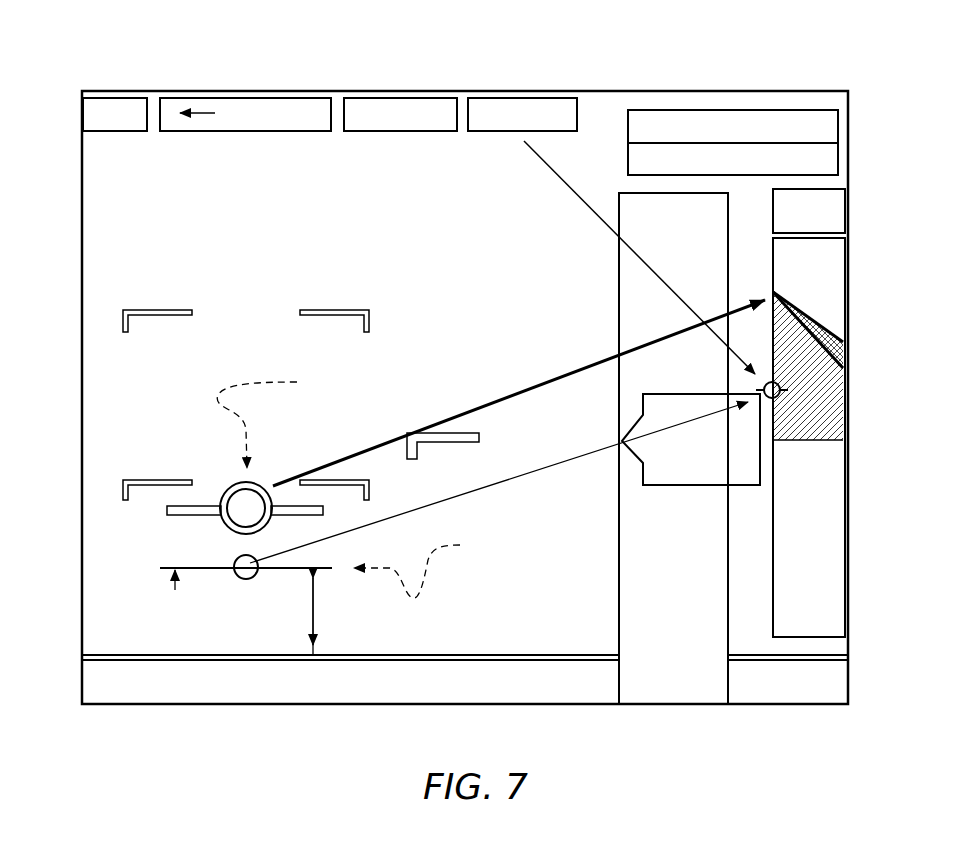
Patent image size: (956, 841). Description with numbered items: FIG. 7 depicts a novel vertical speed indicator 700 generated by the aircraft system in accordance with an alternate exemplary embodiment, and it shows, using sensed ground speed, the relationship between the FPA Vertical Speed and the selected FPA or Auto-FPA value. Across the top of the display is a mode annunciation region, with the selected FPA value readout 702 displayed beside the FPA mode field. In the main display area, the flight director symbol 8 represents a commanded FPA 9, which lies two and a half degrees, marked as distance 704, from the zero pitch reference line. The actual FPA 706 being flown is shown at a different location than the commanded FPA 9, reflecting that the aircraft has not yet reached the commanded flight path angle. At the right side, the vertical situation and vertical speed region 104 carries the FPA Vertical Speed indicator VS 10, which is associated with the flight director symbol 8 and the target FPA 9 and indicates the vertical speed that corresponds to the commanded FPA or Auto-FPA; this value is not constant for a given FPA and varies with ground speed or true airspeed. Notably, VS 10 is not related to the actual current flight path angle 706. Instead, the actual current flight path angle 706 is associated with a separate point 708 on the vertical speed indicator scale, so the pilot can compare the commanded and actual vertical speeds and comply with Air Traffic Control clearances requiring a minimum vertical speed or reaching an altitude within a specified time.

The display 700 is at (636, 91).
The selected flight path angle indicator 702 is at (520, 98).
The distance 704 is at (334, 612).
The actual FPA 706 is at (233, 487).
The point 708 is at (773, 292).
The vertical situation display 104 is at (832, 276).
The flight director symbol 8 is at (175, 590).
The commanded FPA 9 is at (570, 140).
The FPA Vertical Speed indicator 10 is at (769, 405).